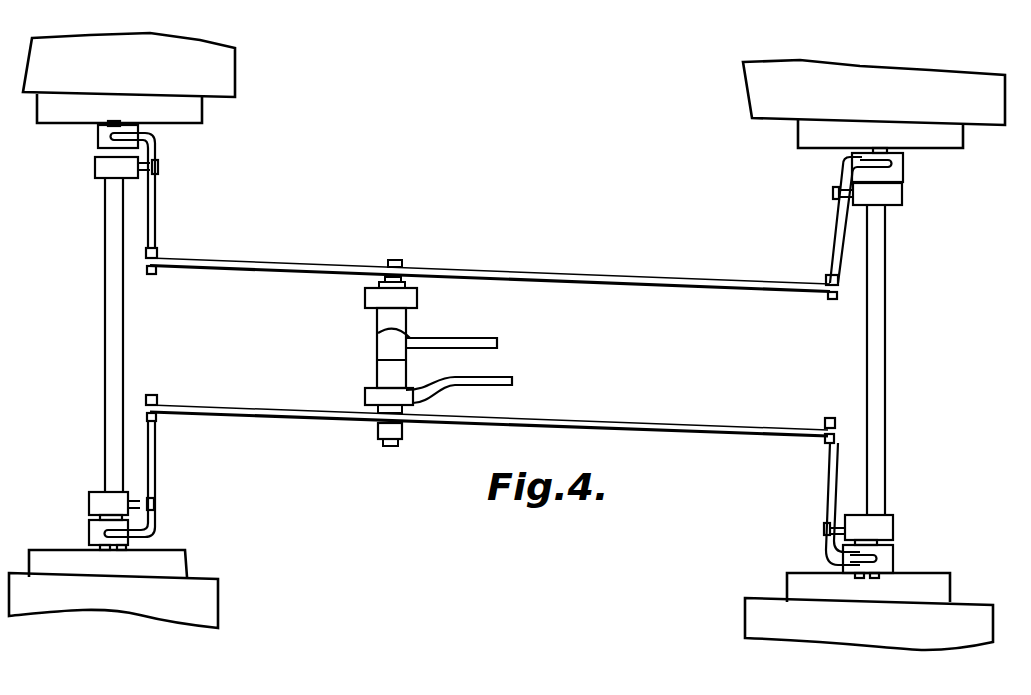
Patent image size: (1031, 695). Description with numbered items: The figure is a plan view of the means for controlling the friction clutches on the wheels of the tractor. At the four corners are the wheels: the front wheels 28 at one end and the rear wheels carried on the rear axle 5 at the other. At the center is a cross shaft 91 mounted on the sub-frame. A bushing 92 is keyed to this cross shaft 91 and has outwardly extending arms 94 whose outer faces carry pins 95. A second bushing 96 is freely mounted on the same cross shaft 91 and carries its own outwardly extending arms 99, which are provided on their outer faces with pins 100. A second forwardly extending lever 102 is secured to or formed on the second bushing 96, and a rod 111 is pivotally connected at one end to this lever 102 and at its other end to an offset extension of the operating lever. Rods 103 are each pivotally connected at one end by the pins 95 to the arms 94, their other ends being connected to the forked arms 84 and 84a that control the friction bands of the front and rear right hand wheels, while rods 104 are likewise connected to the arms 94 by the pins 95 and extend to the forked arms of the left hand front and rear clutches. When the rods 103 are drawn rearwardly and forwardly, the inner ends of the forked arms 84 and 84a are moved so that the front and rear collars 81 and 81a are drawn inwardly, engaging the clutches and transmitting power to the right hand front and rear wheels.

The rear axle 5 is at (165, 43).
The front wheels 28 is at (858, 72).
The collar 81 is at (893, 167).
The rear collar 81a is at (100, 137).
The forked arm 84 is at (835, 242).
The rear forked arm 84a is at (153, 197).
The cross shaft 91 is at (391, 443).
The bushing 92 is at (412, 283).
The outwardly extending arms 94 is at (410, 300).
The pins 95 is at (396, 261).
The second bushing 96 is at (382, 373).
The outwardly extending arms 99 is at (372, 400).
The pins 100 is at (382, 432).
The second forwardly extending lever 102 is at (455, 380).
The rods 103 is at (258, 412).
The rods 104 is at (218, 264).
The rod 111 is at (378, 333).